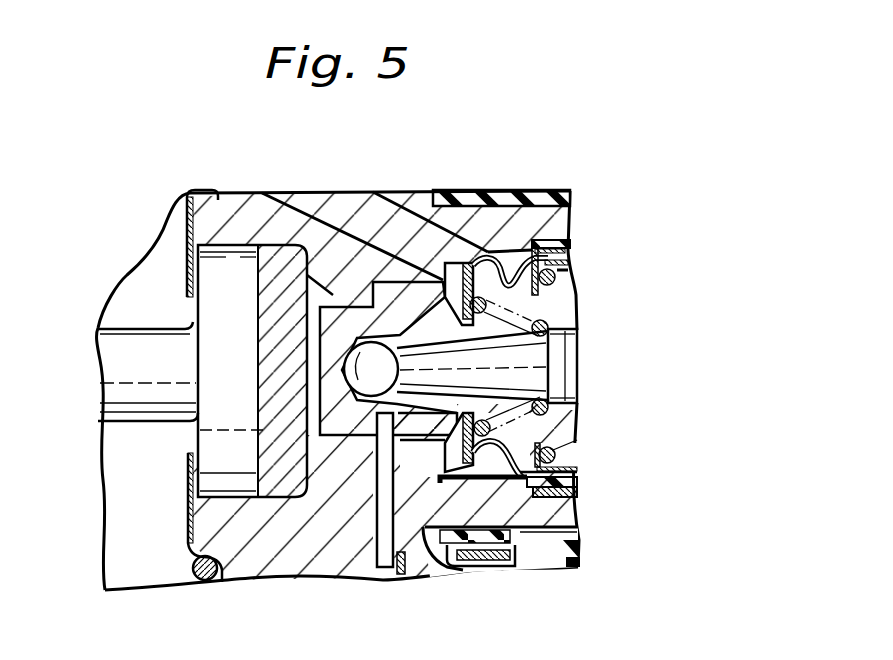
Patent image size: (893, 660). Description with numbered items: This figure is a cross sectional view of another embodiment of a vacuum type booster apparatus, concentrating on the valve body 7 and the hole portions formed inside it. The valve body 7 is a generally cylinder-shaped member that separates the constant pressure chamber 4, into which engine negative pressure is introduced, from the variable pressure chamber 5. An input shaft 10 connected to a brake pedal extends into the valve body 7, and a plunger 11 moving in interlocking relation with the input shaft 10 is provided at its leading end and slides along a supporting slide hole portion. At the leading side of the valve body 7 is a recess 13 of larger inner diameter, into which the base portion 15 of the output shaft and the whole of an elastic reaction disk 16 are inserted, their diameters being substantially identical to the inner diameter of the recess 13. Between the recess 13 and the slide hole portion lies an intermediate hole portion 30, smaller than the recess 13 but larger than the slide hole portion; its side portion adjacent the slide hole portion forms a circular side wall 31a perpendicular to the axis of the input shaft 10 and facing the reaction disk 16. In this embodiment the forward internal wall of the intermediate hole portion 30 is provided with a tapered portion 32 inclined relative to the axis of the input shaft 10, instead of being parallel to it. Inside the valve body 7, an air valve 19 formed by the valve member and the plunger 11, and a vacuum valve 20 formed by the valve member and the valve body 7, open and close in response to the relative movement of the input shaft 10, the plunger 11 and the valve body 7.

The constant pressure chamber 4 is at (130, 566).
The variable pressure chamber 5 is at (412, 565).
The valve body 7 is at (255, 558).
The input shaft 10 is at (510, 370).
The plunger 11 is at (320, 430).
The recess 13 is at (246, 195).
The base portion 15 is at (205, 310).
The elastic reaction disk 16 is at (262, 425).
The air valve 19 is at (436, 445).
The vacuum valve 20 is at (497, 190).
The intermediate hole portion 30 is at (321, 262).
The circular side wall 31a is at (443, 240).
The tapered portion 32 is at (335, 270).